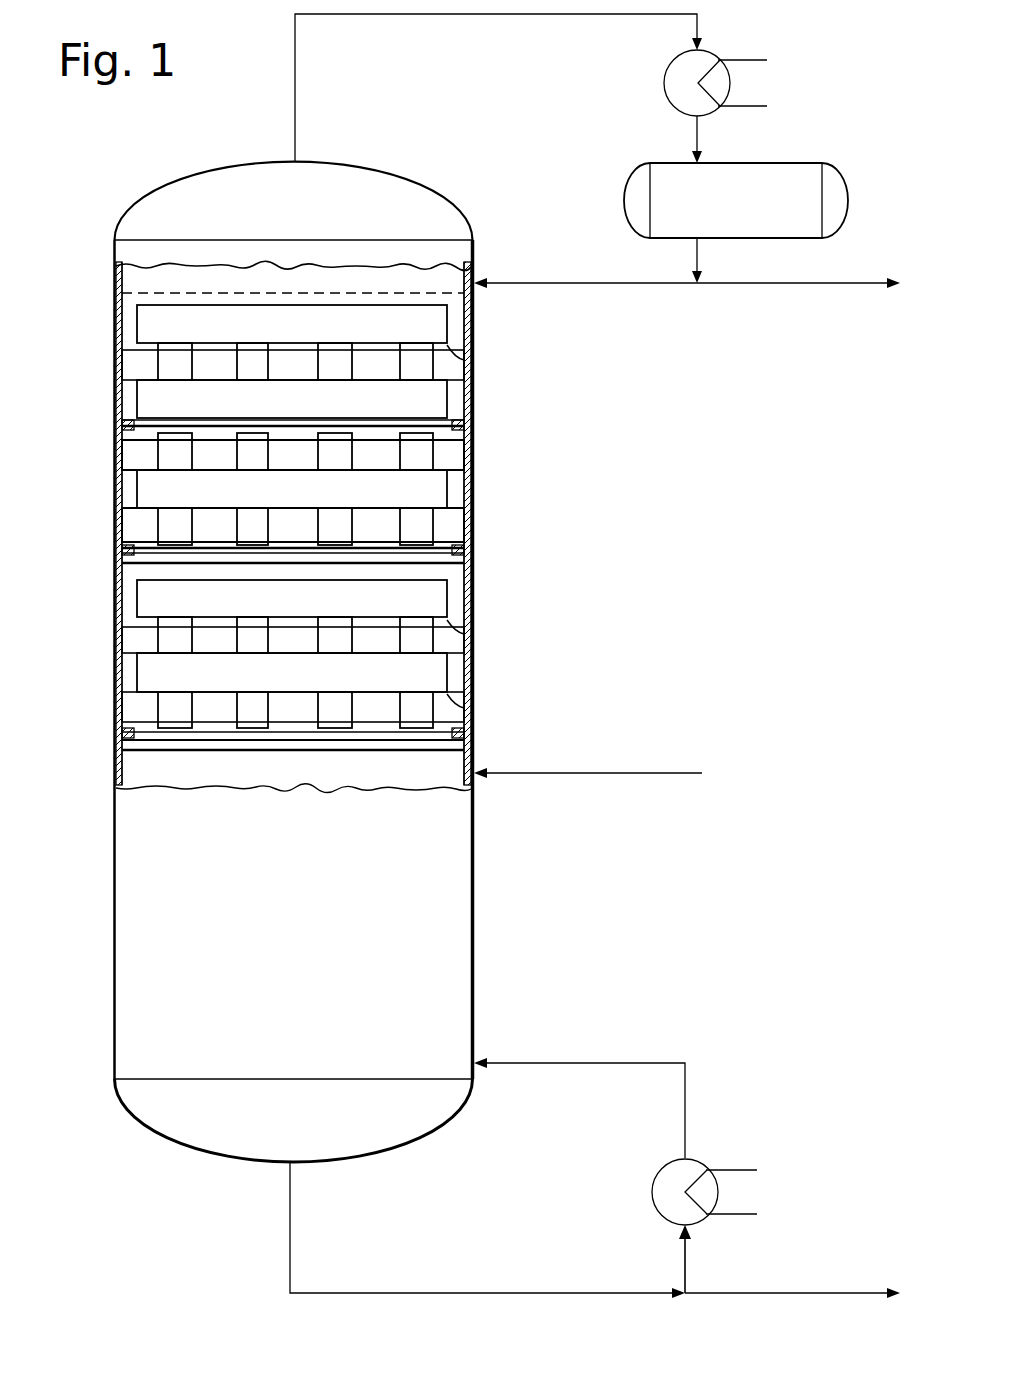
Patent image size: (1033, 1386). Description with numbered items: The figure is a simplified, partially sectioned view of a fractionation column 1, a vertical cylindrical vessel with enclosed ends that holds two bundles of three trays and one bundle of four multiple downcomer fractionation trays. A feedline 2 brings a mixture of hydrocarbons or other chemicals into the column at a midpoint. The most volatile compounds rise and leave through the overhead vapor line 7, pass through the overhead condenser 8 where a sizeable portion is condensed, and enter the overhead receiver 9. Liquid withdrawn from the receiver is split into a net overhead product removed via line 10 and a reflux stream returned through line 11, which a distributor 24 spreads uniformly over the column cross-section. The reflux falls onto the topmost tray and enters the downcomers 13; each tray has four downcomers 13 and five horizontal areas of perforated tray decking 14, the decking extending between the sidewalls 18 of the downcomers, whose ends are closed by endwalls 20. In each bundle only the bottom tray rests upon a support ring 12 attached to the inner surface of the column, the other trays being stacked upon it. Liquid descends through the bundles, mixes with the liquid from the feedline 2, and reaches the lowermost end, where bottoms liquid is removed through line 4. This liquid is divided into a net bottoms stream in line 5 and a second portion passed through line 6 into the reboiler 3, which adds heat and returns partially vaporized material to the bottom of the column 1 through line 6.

The fractionation column 1 is at (486, 864).
The feedline 2 is at (650, 773).
The reboiler 3 is at (700, 1158).
The bottoms liquid line 4 is at (448, 1293).
The net bottoms stream line 5 is at (793, 1293).
The reboiler line 6 is at (533, 1063).
The overhead vapor line 7 is at (297, 100).
The overhead condenser 8 is at (715, 45).
The overhead receiver 9 is at (686, 214).
The net overhead product line 10 is at (745, 285).
The reflux line 11 is at (610, 284).
The support ring 12 is at (467, 435).
The downcomers 13 is at (160, 397).
The tray decking 14 is at (455, 353).
The sidewalls 18 is at (276, 336).
The endwalls 20 is at (340, 365).
The distributor 24 is at (412, 293).